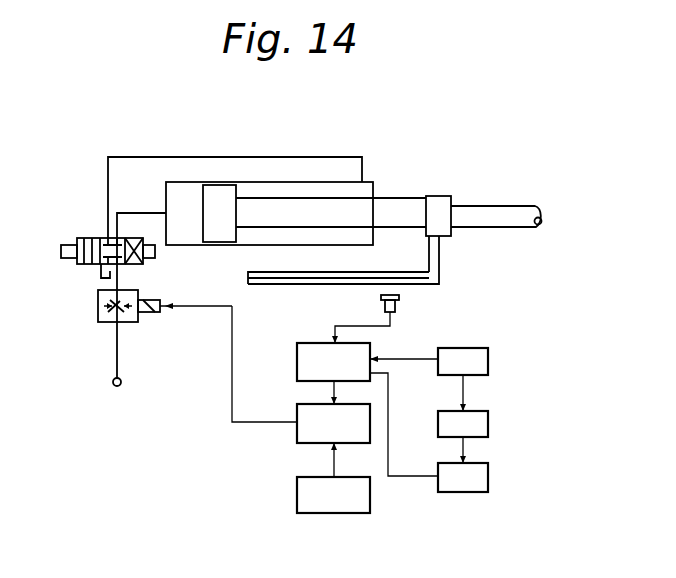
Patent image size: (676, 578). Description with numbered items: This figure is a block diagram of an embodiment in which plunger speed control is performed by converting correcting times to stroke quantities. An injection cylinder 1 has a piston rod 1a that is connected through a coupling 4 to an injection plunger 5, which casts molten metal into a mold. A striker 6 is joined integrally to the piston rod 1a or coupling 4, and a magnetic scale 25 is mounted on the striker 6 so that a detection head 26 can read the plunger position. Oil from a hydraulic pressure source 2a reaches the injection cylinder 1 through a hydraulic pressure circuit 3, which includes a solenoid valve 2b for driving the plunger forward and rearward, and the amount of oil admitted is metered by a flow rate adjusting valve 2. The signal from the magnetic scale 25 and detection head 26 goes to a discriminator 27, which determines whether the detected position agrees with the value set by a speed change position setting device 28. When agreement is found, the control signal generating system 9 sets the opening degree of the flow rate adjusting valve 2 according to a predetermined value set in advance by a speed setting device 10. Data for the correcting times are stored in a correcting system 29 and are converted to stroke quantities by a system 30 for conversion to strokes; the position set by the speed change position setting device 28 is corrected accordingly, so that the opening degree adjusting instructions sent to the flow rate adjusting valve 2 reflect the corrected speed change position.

The injection cylinder 1 is at (375, 190).
The piston rod 1a is at (291, 198).
The flow rate adjusting valve 2 is at (97, 305).
The hydraulic pressure source 2a is at (116, 387).
The solenoid valve 2b is at (86, 237).
The hydraulic pressure circuit 3 is at (351, 157).
The coupling 4 is at (440, 196).
The injection plunger 5 is at (516, 207).
The striker 6 is at (440, 257).
The control signal generating system 9 is at (297, 438).
The speed setting device 10 is at (297, 505).
The magnetic scale 25 is at (275, 285).
The detection head 26 is at (400, 307).
The discriminator 27 is at (297, 363).
The speed change position setting device 28 is at (488, 360).
The correcting system 29 is at (488, 422).
The system for conversion to strokes 30 is at (488, 480).